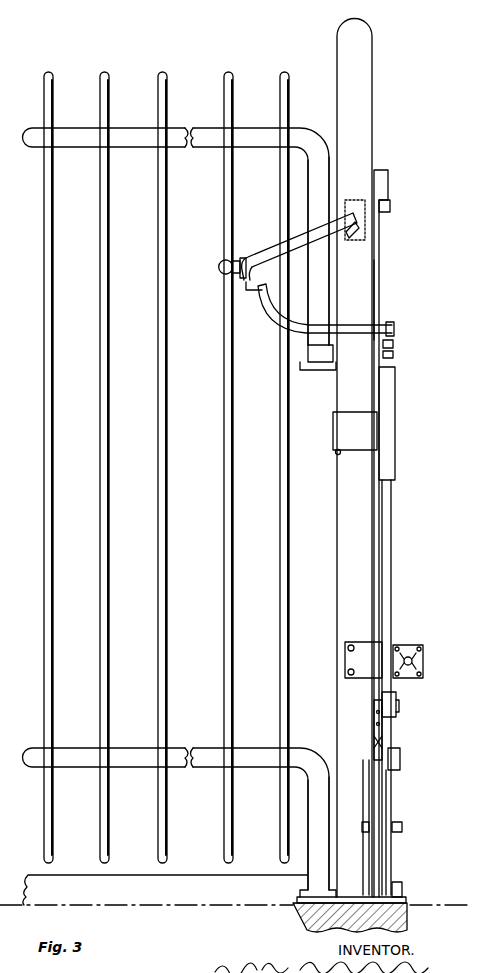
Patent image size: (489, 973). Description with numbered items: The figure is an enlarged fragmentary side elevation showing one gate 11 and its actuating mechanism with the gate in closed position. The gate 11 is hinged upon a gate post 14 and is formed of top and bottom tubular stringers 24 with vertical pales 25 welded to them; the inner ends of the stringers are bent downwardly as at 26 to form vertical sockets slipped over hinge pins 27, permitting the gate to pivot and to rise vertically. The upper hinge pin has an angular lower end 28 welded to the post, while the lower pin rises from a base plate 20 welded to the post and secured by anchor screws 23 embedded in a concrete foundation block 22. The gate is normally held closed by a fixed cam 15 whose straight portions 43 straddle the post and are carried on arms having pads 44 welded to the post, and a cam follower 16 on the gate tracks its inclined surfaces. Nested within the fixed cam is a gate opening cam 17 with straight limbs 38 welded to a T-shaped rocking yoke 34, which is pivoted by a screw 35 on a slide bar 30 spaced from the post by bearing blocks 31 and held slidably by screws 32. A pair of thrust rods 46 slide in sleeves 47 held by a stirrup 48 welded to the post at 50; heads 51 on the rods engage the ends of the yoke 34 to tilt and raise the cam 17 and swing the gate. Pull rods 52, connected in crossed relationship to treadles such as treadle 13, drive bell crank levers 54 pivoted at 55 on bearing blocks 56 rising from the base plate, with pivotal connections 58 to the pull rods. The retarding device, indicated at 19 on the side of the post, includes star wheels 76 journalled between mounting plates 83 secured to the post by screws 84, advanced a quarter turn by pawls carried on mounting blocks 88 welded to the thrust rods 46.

The gate 11 is at (68, 126).
The treadle 13 is at (78, 877).
The gate post 14 is at (364, 108).
The fixed cam 15 is at (273, 242).
The cam follower 16 is at (240, 257).
The gate opening cam 17 is at (278, 318).
The mounting plate 19 is at (426, 660).
The base plate 20 is at (292, 905).
The concrete foundation block 22 is at (405, 914).
The anchor screw 23 is at (405, 893).
The stringer 24 is at (141, 150).
The pale 25 is at (44, 380).
The downwardly bent stringer end 26 is at (316, 191).
The hinge pin 27 is at (298, 897).
The angular lower end 28 is at (320, 372).
The slide bar 30 is at (380, 266).
The bearing block 31 is at (377, 298).
The screw 32 is at (392, 207).
The T-shaped rocking yoke 34 is at (393, 345).
The screw 35 is at (395, 332).
The straight limb 38 is at (357, 341).
The straight portion 43 is at (346, 232).
The pad 44 is at (352, 200).
The thrust rod 46 is at (391, 567).
The sleeve 47 is at (385, 445).
The stirrup 48 is at (343, 435).
The weld 50 is at (337, 452).
The head 51 is at (393, 356).
The pull rod 52 is at (374, 760).
The bell crank lever 54 is at (385, 797).
The pivot 55 is at (402, 827).
The bearing block 56 is at (368, 850).
The pivotal connection 58 is at (402, 760).
The star wheel 76 is at (409, 651).
The mounting plate 83 is at (348, 663).
The screw 84 is at (348, 647).
The mounting block 88 is at (396, 712).